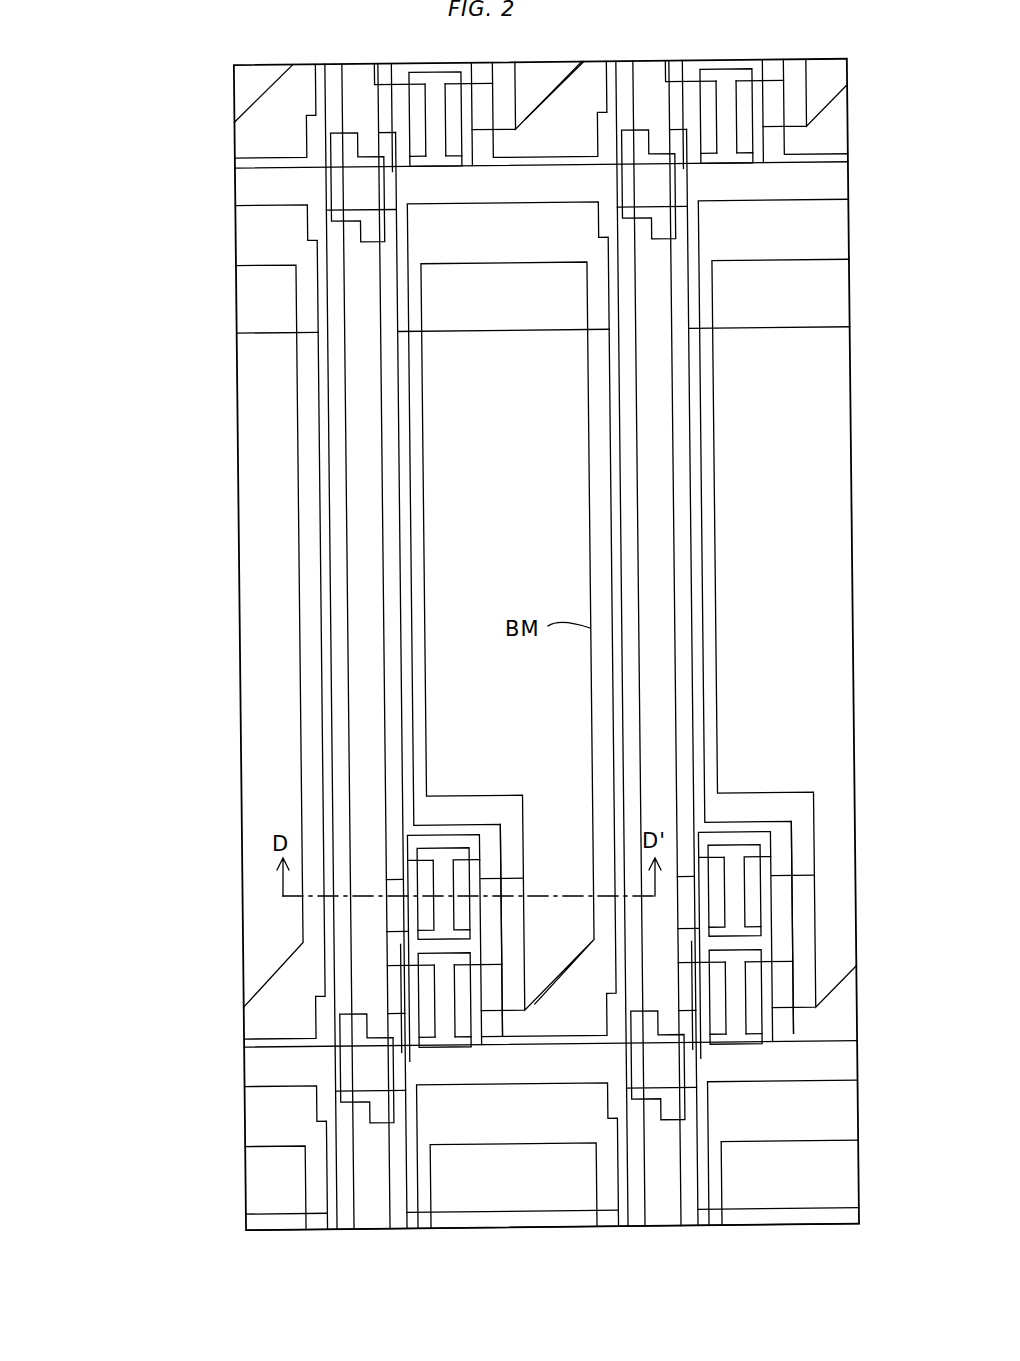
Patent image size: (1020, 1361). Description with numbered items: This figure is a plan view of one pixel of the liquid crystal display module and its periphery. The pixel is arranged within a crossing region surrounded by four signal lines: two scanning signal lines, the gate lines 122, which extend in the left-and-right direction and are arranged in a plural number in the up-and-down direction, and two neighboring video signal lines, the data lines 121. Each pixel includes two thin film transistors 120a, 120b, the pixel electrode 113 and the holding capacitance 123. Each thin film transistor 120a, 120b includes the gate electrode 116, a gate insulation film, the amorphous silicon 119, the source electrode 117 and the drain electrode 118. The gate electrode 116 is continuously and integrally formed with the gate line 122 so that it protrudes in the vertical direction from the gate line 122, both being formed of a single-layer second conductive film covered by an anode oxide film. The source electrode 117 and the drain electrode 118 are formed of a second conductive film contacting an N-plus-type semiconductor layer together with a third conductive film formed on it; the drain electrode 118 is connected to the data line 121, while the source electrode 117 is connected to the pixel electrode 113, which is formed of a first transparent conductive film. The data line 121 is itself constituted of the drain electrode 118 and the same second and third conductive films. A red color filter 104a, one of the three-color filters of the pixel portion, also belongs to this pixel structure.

The gate line 122 is at (367, 207).
The data line 121 is at (346, 642).
The pixel electrode 113 is at (410, 548).
The holding capacitance 123 is at (575, 252).
The gate electrode 116 is at (450, 833).
The amorphous silicon 119 is at (363, 1012).
The thin film transistor 120a is at (506, 838).
The thin film transistor 120b is at (510, 998).
The drain electrode 118 is at (437, 993).
The source electrode 117 is at (456, 1046).
The color filter 104a is at (633, 1214).